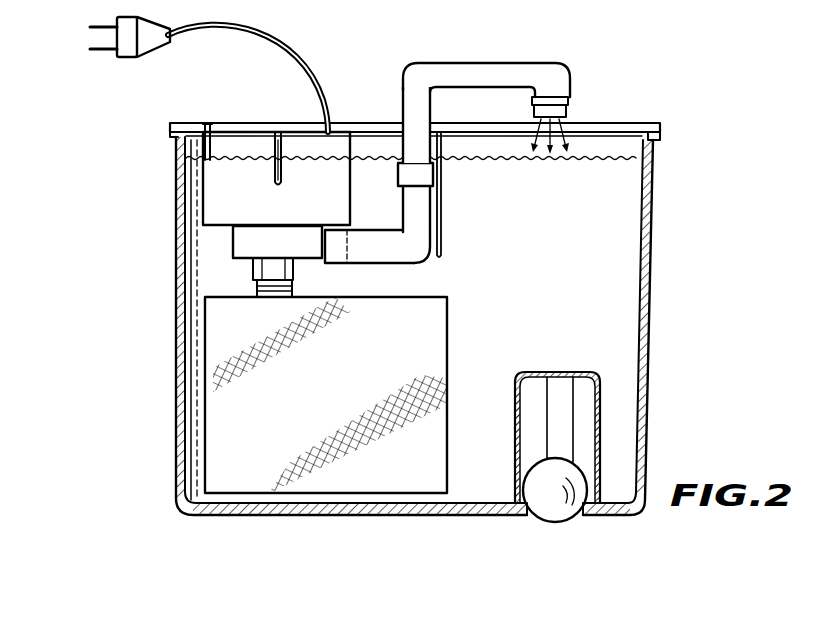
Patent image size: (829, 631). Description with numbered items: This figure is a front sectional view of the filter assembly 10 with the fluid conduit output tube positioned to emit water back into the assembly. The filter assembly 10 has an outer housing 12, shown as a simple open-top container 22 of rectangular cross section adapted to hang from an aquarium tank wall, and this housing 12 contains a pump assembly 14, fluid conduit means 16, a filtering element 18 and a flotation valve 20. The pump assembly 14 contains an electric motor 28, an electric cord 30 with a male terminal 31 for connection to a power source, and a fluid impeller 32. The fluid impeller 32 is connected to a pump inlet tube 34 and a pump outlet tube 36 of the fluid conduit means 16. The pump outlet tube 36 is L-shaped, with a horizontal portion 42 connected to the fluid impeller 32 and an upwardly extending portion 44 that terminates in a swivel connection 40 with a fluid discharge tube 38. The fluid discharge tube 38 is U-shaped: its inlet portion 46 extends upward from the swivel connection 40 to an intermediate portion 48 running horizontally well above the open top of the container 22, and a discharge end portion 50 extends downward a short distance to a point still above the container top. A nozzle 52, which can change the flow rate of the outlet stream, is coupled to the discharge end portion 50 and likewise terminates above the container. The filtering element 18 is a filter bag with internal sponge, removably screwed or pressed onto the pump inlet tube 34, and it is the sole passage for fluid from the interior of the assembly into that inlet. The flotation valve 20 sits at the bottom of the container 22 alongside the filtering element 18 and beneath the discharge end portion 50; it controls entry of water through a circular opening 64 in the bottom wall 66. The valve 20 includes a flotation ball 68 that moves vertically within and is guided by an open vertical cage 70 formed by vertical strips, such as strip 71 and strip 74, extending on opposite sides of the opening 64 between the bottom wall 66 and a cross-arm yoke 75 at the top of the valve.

The filter assembly 10 is at (118, 304).
The outer housing 12 is at (175, 370).
The pump assembly 14 is at (203, 192).
The fluid conduit means 16 is at (433, 205).
The filtering element 18 is at (452, 361).
The flotation valve 20 is at (510, 404).
The open-top container 22 is at (177, 230).
The electric motor 28 is at (213, 137).
The electric cord 30 is at (273, 62).
The male terminal 31 is at (149, 45).
The fluid impeller 32 is at (243, 245).
The pump inlet tube 34 is at (298, 268).
The pump outlet tube 36 is at (434, 262).
The fluid discharge tube 38 is at (432, 112).
The swivel connection 40 is at (407, 170).
The horizontal portion 42 is at (372, 264).
The upwardly extending portion 44 is at (442, 228).
The inlet portion 46 is at (432, 145).
The intermediate portion 48 is at (455, 66).
The discharge end portion 50 is at (570, 88).
The nozzle 52 is at (569, 109).
The circular opening 64 is at (578, 520).
The bottom wall 66 is at (360, 517).
The flotation ball 68 is at (545, 481).
The open vertical cage 70 is at (612, 410).
The vertical strip 71 is at (518, 433).
The vertical strip 74 is at (549, 392).
The cross-arm yoke 75 is at (580, 374).